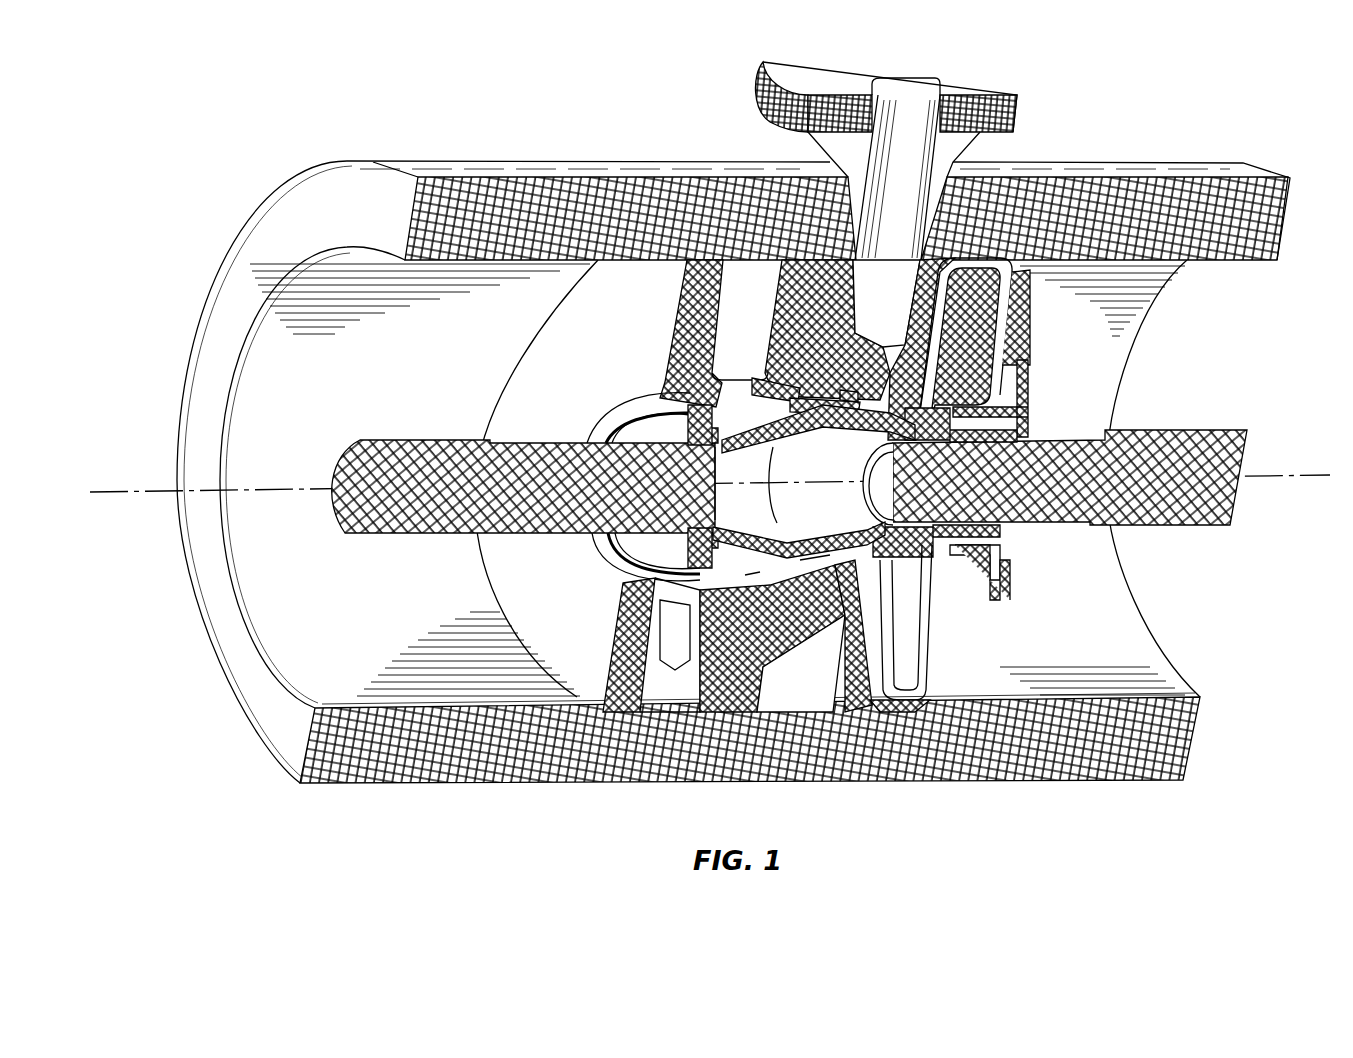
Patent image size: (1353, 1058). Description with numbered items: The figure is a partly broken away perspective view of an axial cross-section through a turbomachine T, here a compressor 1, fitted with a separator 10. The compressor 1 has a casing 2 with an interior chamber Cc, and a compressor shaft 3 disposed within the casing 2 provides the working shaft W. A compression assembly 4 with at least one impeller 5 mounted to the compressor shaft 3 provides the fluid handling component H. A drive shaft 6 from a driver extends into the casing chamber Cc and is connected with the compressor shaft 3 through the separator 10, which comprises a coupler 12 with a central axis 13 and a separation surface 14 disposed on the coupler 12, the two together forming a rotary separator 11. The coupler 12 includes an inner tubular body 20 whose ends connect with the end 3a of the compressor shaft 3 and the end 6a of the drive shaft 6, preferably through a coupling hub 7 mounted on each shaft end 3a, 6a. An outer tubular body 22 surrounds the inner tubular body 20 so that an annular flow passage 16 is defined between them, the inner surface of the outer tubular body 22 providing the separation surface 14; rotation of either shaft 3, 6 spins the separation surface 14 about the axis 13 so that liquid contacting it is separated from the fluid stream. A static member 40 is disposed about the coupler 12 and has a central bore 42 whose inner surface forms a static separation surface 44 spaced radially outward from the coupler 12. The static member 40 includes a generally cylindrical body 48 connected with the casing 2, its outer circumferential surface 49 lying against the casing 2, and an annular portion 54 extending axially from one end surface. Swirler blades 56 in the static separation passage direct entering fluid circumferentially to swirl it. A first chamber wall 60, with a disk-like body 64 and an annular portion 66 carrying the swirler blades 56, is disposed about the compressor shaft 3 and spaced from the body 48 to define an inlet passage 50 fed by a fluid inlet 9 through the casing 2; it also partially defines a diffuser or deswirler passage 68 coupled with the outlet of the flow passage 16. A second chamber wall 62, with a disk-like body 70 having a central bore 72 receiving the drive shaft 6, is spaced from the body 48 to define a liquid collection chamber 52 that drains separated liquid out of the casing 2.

The compressor 1 is at (590, 135).
The casing 2 is at (1125, 128).
The compressor shaft 3 is at (1178, 432).
The end of compressor shaft 3a is at (872, 486).
The compression assembly 4 is at (1040, 356).
The impeller 5 is at (1025, 398).
The drive shaft 6 is at (418, 452).
The end of drive shaft 6a is at (720, 485).
The coupling hub 7 is at (640, 570).
The fluid inlet 9 is at (913, 100).
The separator 10 is at (728, 575).
The rotary separator 11 is at (757, 572).
The coupler 12 is at (813, 550).
The central axis 13 is at (1290, 474).
The separation surface 14 is at (830, 422).
The flow passage 16 is at (795, 418).
The inner tubular body 20 is at (778, 528).
The outer tubular body 22 is at (703, 597).
The static member 40 is at (795, 257).
The central bore 42 is at (790, 390).
The static separation surface 44 is at (617, 620).
The cylindrical body 48 is at (797, 293).
The outer circumferential surface 49 is at (808, 255).
The inlet passage 50 is at (893, 287).
The liquid collection chamber 52 is at (760, 292).
The annular portion 54 is at (752, 378).
The swirler blades 56 is at (850, 392).
The first chamber wall 60 is at (942, 257).
The second chamber wall 62 is at (705, 257).
The disk-like body 64 is at (975, 300).
The annular portion 66 is at (840, 620).
The deswirler passage 68 is at (920, 322).
The disk-like body 70 is at (685, 318).
The central bore 72 is at (655, 394).
The turbomachine T is at (452, 95).
The fluid handling components H is at (1010, 600).
The working shaft W is at (1203, 560).
The interior chamber Cc is at (1125, 306).